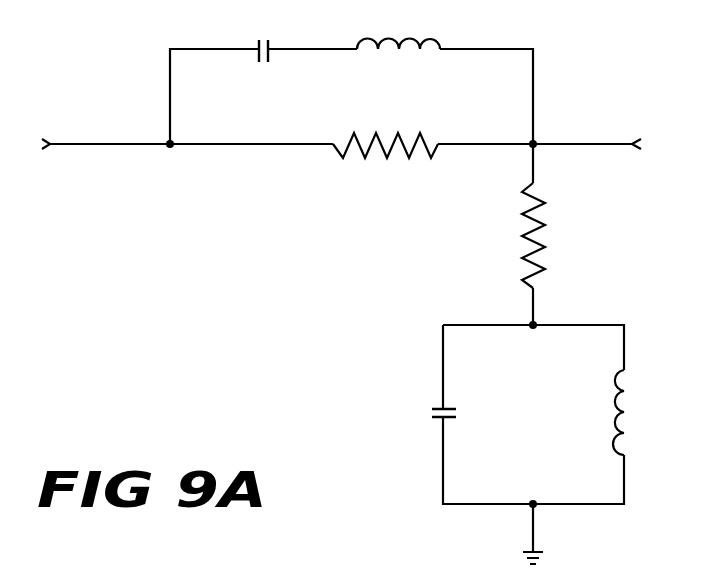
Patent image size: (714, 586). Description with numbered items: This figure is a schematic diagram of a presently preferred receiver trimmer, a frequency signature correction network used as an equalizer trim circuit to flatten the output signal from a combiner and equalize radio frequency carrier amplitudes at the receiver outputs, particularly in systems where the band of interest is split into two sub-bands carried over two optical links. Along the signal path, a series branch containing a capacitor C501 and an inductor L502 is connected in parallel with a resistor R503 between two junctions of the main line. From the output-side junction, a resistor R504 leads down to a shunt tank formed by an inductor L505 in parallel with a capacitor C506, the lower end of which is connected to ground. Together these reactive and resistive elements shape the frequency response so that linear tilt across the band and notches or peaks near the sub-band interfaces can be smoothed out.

The capacitor C501 is at (257, 44).
The inductor L502 is at (430, 42).
The resistor R503 is at (396, 118).
The resistor R504 is at (523, 258).
The inductor L505 is at (614, 415).
The capacitor C506 is at (441, 406).